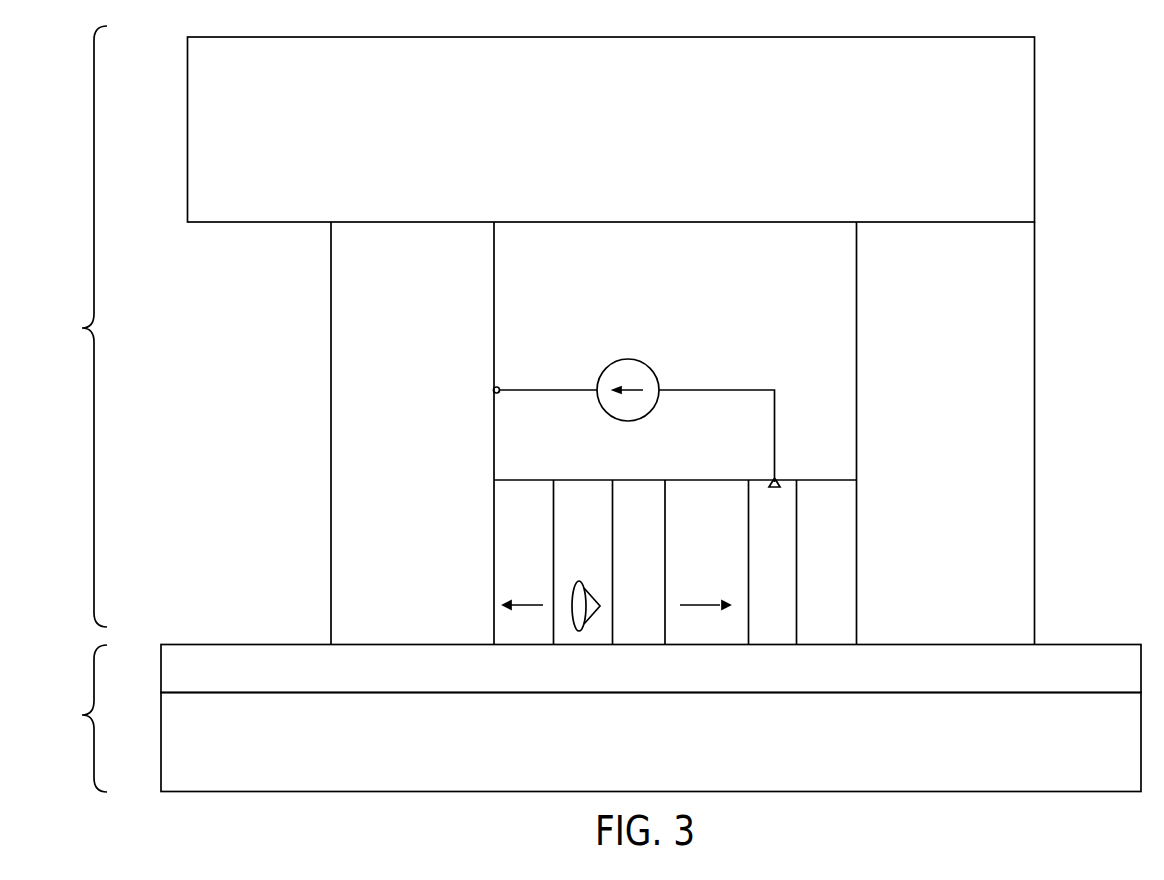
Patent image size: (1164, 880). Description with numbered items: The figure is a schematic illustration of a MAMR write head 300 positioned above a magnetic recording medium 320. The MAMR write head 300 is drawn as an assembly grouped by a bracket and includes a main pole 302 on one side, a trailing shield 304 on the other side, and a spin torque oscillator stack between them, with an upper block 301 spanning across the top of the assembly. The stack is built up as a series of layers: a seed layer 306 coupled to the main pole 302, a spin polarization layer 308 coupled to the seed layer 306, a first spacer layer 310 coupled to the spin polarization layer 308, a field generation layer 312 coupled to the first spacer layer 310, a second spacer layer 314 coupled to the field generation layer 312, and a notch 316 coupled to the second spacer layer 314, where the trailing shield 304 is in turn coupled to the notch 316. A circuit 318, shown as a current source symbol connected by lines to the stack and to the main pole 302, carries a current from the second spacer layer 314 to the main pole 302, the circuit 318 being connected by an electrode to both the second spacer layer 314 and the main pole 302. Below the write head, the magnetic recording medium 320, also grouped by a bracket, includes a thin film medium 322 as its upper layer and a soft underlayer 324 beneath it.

The MAMR write head 300 is at (68, 326).
The top housing block 301 is at (622, 143).
The main pole 302 is at (390, 443).
The trailing shield 304 is at (926, 443).
The seed layer 306 is at (501, 547).
The spin polarization layer 308 is at (564, 547).
The first spacer layer 310 is at (620, 547).
The field generation layer 312 is at (682, 547).
The second spacer layer 314 is at (752, 547).
The notch 316 is at (805, 547).
The circuit 318 is at (628, 359).
The magnetic recording medium 320 is at (68, 718).
The thin film medium 322 is at (568, 675).
The soft underlayer 324 is at (593, 672).